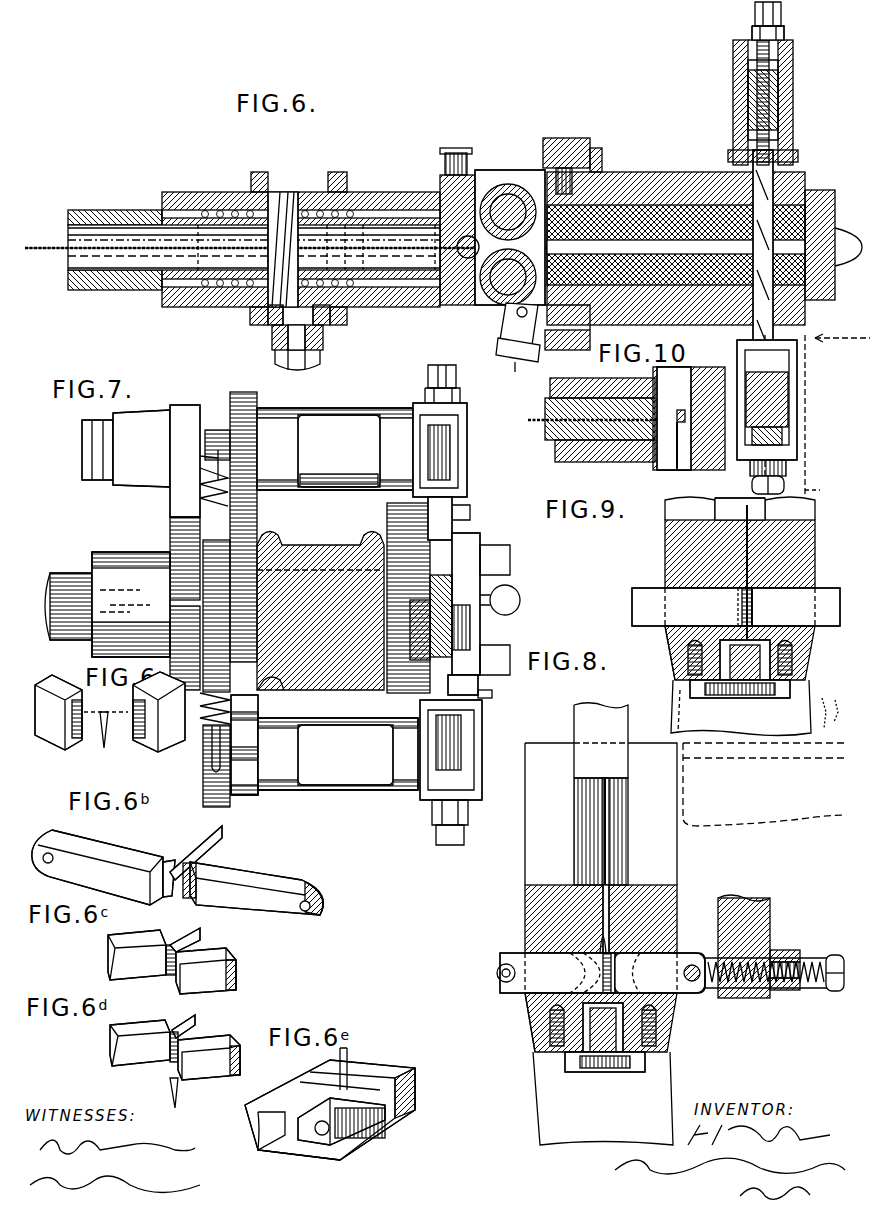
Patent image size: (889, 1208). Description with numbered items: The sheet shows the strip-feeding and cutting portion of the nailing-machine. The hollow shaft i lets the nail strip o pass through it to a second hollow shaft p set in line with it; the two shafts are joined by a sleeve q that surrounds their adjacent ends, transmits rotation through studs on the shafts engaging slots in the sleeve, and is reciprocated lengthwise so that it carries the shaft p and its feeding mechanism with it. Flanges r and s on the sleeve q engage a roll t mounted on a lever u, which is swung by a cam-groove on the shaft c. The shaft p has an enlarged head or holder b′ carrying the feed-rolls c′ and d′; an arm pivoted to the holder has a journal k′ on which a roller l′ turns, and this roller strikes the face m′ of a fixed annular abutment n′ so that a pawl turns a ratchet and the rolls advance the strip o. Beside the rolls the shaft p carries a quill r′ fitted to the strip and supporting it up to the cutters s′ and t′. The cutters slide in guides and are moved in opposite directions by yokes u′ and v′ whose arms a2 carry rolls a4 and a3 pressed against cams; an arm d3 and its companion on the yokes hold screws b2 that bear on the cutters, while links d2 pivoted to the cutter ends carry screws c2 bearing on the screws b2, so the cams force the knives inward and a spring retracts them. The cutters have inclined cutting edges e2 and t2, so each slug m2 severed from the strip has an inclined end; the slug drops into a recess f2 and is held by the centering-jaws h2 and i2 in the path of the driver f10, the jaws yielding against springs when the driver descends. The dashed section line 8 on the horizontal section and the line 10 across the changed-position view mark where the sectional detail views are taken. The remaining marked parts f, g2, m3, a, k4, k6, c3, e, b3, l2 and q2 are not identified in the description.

In FIG. 6, the hollow shaft i is at (90, 210).
In FIG. 8, the hollow shaft i is at (660, 935).
In FIG. 6, the strip o is at (60, 251).
In FIG. 10, the strip o is at (545, 420).
In FIG. 9, the strip o is at (745, 586).
In FIG. 6B, the strip o is at (212, 848).
In FIG. 6C, the strip o is at (200, 944).
In FIG. 6D, the strip o is at (196, 1024).
In FIG. 6, the hollow shaft p is at (390, 195).
In FIG. 10, the hollow shaft p is at (598, 450).
In FIG. 6, the sleeve q is at (283, 195).
In FIG. 6, the flange r is at (252, 178).
In FIG. 6, the flange s is at (333, 172).
In FIG. 6, the roll t is at (270, 322).
In FIG. 10, the roll t is at (672, 468).
In FIG. 6, the lever u is at (324, 339).
In FIG. 6, the head or holder b′ is at (462, 185).
In FIG. 6, the feed-roll d′ is at (512, 195).
In FIG. 6, the face of annular abutment m′ is at (575, 132).
In FIG. 6, the quill r′ is at (612, 238).
In FIG. 10, the quill r′ is at (553, 438).
In FIG. 6, the cutter s′ is at (776, 196).
In FIG. 10, the cutter s′ is at (678, 372).
In FIG. 9, the cutter s′ is at (796, 607).
In FIG. 8, the cutter s′ is at (660, 973).
In FIG. 7, the cutter s′ is at (445, 518).
In FIG. 6A, the cutter s′ is at (148, 742).
In FIG. 6B, the cutter s′ is at (258, 876).
In FIG. 6C, the cutter s′ is at (236, 958).
In FIG. 6D, the cutter s′ is at (240, 1042).
In FIG. 6, the cutter t′ is at (808, 284).
In FIG. 9, the cutter t′ is at (692, 607).
In FIG. 8, the cutter t′ is at (556, 973).
In FIG. 7, the cutter t′ is at (478, 682).
In FIG. 6A, the cutter t′ is at (60, 745).
In FIG. 6B, the cutter t′ is at (135, 855).
In FIG. 6C, the cutter t′ is at (118, 938).
In FIG. 6D, the cutter t′ is at (132, 1028).
In FIG. 6, the feed-roll c′ is at (508, 312).
In FIG. 6, the roller l′ is at (500, 350).
In FIG. 6, the journal k′ is at (517, 362).
In FIG. 6, the fixed annular abutment n′ is at (566, 350).
In FIG. 6, the screw c2 is at (736, 51).
In FIG. 10, the screw c2 is at (750, 470).
In FIG. 8, the screw c2 is at (828, 960).
In FIG. 7, the screw c2 is at (196, 490).
In FIG. 6A, the screw c2 is at (150, 745).
In FIG. 6, the screw b2 is at (740, 101).
In FIG. 10, the screw b2 is at (800, 407).
In FIG. 8, the screw b2 is at (800, 948).
In FIG. 7, the screw b2 is at (268, 536).
In FIG. 6, the link d2 is at (794, 47).
In FIG. 7, the link d2 is at (447, 468).
In FIG. 10, the arm d3 is at (790, 392).
In FIG. 8, the arm d3 is at (750, 930).
In FIG. 7, the arm d3 is at (465, 742).
In FIG. 10, the arm a2 is at (788, 445).
In FIG. 8, the arm a2 is at (795, 990).
In FIG. 7, the arm a2 is at (494, 694).
In FIG. 7, the roll a3 is at (234, 398).
In FIG. 7, the roll a4 is at (210, 785).
In FIG. 10, the section line 8 is at (820, 487).
In FIG. 9, the section line 10 is at (612, 588).
In FIG. 9, the post / block f is at (745, 545).
In FIG. 8, the post / block f is at (608, 726).
In FIG. 7, the post / block f is at (470, 588).
In FIG. 9, the recess f2 is at (810, 645).
In FIG. 8, the recess f2 is at (672, 1008).
In FIG. 8, the driver f10 is at (610, 872).
In FIG. 9, the base block g2 is at (725, 652).
In FIG. 8, the base block g2 is at (588, 1012).
In FIG. 6E, the base block g2 is at (396, 1100).
In FIG. 9, the centering-jaw h2 is at (800, 665).
In FIG. 8, the centering-jaw h2 is at (565, 1054).
In FIG. 6E, the centering-jaw h2 is at (312, 1112).
In FIG. 9, the centering-jaw i2 is at (688, 660).
In FIG. 8, the centering-jaw i2 is at (660, 1020).
In FIG. 6E, the centering-jaw i2 is at (372, 1090).
In FIG. 10, the slug m2 is at (690, 378).
In FIG. 9, the slug m2 is at (759, 605).
In FIG. 8, the slug m2 is at (607, 973).
In FIG. 6A, the slug m2 is at (103, 748).
In FIG. 6D, the slug m2 is at (170, 1045).
In FIG. 6D, the wedge key m3 is at (170, 1088).
In FIG. 6A, the inclined cutting edge t2 is at (92, 718).
In FIG. 6B, the inclined cutting edge t2 is at (170, 866).
In FIG. 10, the inclined cutting edge e2 is at (688, 456).
In FIG. 8, the inclined cutting edge e2 is at (601, 814).
In FIG. 6B, the inclined cutting edge e2 is at (198, 852).
In FIG. 6C, the inclined cutting edge e2 is at (174, 944).
In FIG. 6D, the inclined cutting edge e2 is at (176, 1028).
In FIG. 8, the slot a is at (598, 953).
In FIG. 7, the bolt body k4 is at (183, 470).
In FIG. 7, the bearing plate k6 is at (185, 558).
In FIG. 7, the shaft c is at (62, 590).
In FIG. 7, the spring c3 is at (210, 740).
In FIG. 7, the yoke v′ is at (325, 430).
In FIG. 7, the yoke u′ is at (335, 770).
In FIG. 7, the gear e is at (420, 550).
In FIG. 7, the lobe b3 is at (290, 692).
In FIG. 6E, the base l2 is at (318, 1136).
In FIG. 6, the pin q2 is at (283, 249).